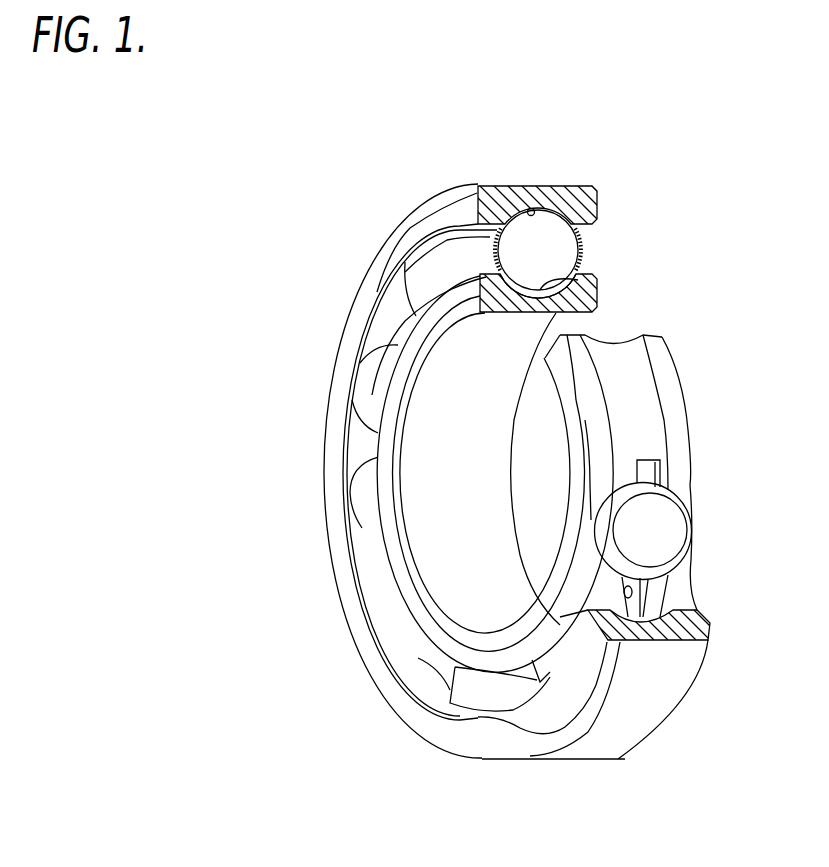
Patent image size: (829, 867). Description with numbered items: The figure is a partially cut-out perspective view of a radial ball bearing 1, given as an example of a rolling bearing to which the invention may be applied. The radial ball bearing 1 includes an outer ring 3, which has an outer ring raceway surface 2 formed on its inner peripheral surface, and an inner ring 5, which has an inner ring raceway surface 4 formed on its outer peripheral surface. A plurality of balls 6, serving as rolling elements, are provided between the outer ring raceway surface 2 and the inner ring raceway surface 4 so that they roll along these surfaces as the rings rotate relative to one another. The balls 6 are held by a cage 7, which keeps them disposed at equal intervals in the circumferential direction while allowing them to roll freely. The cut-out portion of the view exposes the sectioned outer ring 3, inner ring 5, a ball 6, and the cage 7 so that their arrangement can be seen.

The radial ball bearing 1 is at (606, 175).
The outer ring raceway surface 2 is at (532, 208).
The outer ring 3 is at (502, 203).
The inner ring raceway surface 4 is at (580, 287).
The inner ring 5 is at (597, 311).
The ball 6 is at (556, 238).
The cage 7 is at (433, 270).